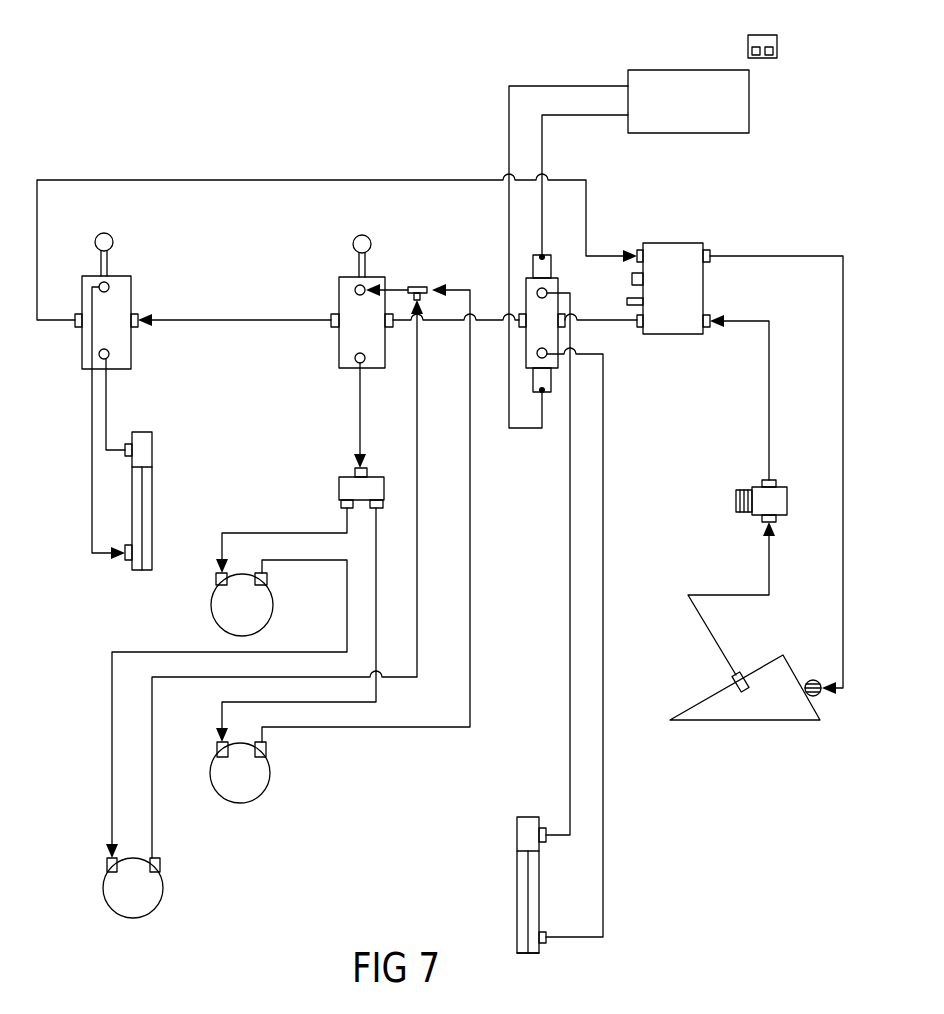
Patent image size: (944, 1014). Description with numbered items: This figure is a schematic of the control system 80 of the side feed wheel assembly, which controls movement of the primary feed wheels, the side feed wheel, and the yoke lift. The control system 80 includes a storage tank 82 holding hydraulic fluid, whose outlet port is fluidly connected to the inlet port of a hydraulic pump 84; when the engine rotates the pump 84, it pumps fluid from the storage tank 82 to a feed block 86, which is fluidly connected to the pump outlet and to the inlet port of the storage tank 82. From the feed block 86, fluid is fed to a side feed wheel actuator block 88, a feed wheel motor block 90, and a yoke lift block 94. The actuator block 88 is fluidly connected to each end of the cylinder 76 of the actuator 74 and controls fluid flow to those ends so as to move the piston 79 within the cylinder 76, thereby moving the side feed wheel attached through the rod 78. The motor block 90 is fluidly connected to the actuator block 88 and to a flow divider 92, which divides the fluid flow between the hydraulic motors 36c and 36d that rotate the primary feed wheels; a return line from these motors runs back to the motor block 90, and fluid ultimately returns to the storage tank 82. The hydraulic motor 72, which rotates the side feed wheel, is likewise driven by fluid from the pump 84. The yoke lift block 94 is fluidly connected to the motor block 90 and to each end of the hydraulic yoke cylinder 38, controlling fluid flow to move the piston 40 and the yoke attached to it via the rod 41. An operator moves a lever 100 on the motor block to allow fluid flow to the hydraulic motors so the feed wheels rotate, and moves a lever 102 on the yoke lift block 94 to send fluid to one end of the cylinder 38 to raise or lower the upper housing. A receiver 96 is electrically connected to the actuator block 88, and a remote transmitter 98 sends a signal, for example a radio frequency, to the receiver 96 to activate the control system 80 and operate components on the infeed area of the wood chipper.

The control system 80 is at (263, 88).
The lever 102 is at (112, 237).
The yoke lift block 94 is at (131, 297).
The lever 100 is at (354, 237).
The feed wheel motor block 90 is at (339, 290).
The flow divider 92 is at (339, 487).
The piston 40 is at (140, 463).
The rod 41 is at (143, 485).
The hydraulic yoke cylinder 38 is at (154, 515).
The hydraulic motor 36d is at (222, 613).
The hydraulic motor 36c is at (261, 774).
The hydraulic motor 72 is at (150, 887).
The receiver 96 is at (650, 70).
The transmitter 98 is at (777, 50).
The side feed wheel actuator block 88 is at (558, 290).
The feed block 86 is at (695, 243).
The hydraulic pump 84 is at (787, 497).
The storage tank 82 is at (757, 710).
The piston 79 is at (522, 848).
The cylinder 76 is at (517, 872).
The rod 78 is at (528, 898).
The actuator 74 is at (540, 950).